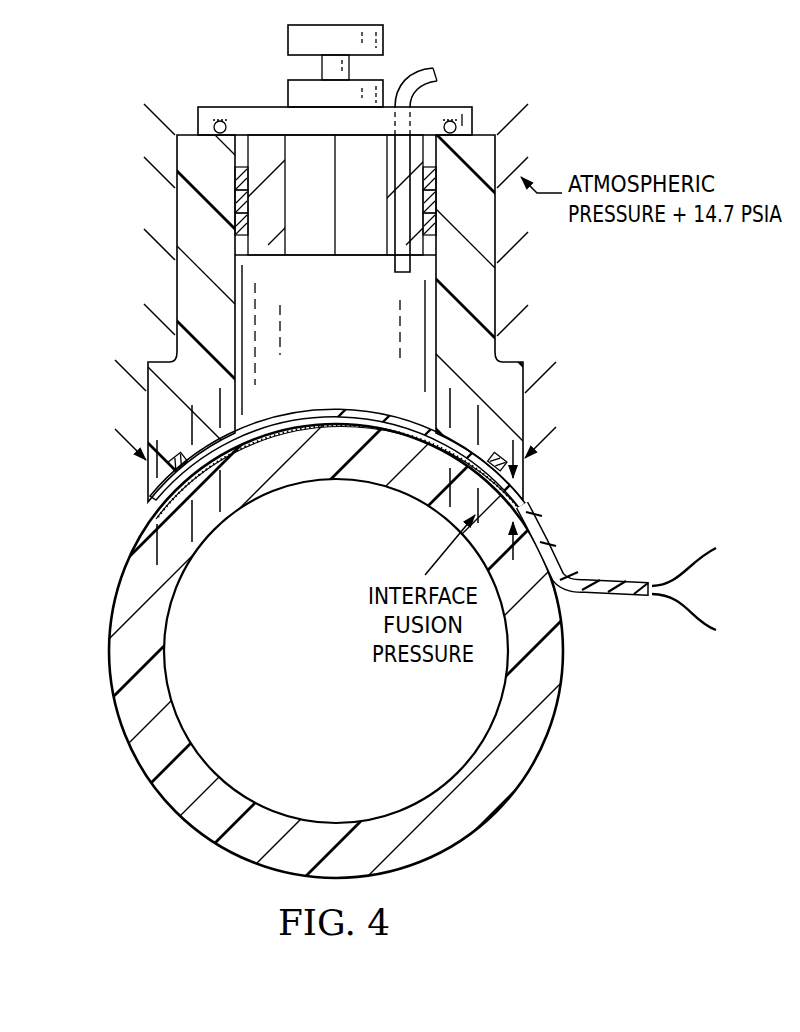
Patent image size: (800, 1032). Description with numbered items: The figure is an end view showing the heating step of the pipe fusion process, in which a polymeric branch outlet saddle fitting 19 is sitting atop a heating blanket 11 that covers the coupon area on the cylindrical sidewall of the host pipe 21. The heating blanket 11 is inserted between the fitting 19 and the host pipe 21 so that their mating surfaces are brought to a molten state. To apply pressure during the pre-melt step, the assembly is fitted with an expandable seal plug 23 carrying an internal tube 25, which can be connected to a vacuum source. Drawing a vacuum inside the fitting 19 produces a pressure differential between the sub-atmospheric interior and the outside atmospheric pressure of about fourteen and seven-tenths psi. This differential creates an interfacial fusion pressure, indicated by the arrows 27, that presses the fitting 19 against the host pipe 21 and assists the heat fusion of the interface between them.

The heating blanket 11 is at (606, 569).
The fitting 19 is at (495, 300).
The host pipe 21 is at (280, 482).
The expandable seal plug 23 is at (458, 105).
The internal tube 25 is at (433, 70).
The arrows 27 is at (515, 548).